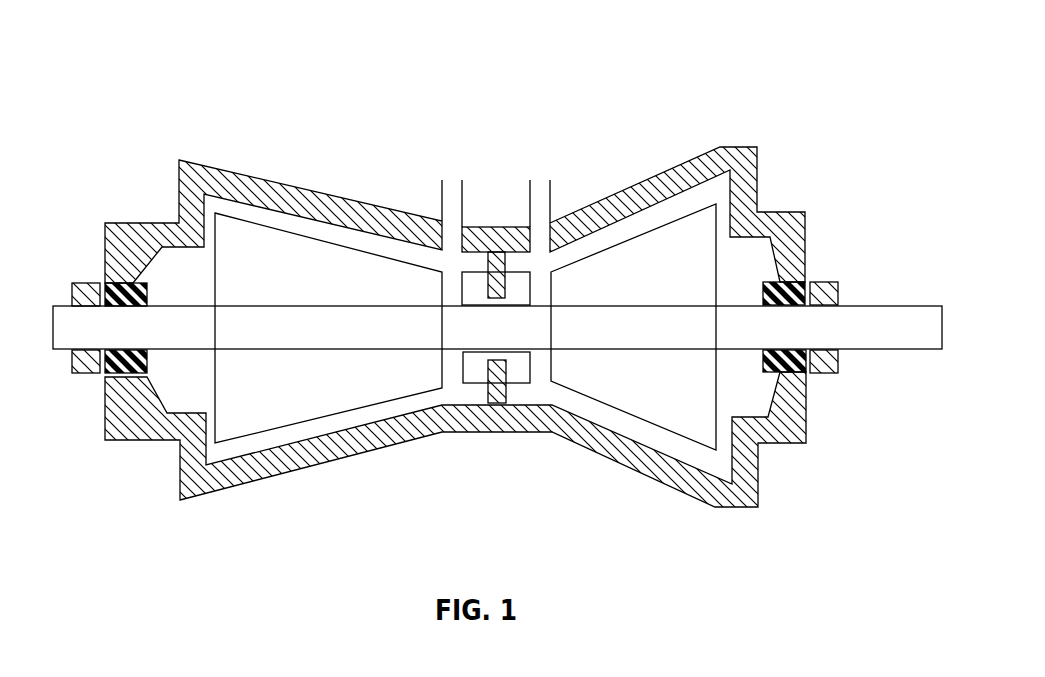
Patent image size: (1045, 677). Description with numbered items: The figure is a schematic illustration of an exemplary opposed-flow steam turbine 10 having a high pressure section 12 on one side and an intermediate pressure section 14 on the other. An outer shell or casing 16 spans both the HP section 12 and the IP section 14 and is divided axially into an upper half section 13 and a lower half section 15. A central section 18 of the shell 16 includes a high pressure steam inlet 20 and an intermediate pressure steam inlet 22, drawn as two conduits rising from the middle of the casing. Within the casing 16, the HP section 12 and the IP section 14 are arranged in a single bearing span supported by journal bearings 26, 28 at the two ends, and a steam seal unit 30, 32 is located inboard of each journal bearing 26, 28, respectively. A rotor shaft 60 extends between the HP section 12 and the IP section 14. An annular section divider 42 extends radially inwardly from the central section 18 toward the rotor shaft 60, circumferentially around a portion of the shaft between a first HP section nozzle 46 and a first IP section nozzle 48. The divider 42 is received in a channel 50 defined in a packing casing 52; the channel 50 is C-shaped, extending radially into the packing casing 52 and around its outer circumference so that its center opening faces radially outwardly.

The opposed-flow steam turbine 10 is at (161, 70).
The high pressure section 12 is at (303, 163).
The upper half section 13 is at (738, 147).
The intermediate pressure section 14 is at (660, 157).
The lower half section 15 is at (652, 478).
The outer shell or casing 16 is at (183, 158).
The central section 18 is at (494, 167).
The high pressure steam inlet 20 is at (440, 200).
The intermediate pressure steam inlet 22 is at (552, 200).
The journal bearing 26 is at (76, 280).
The journal bearing 28 is at (833, 278).
The steam seal unit 30 is at (152, 365).
The steam seal unit 32 is at (774, 376).
The annular section divider 42 is at (508, 392).
The first HP section nozzle 46 is at (426, 295).
The first IP section nozzle 48 is at (569, 289).
The channel 50 is at (500, 362).
The packing casing 52 is at (540, 366).
The rotor shaft 60 is at (910, 287).